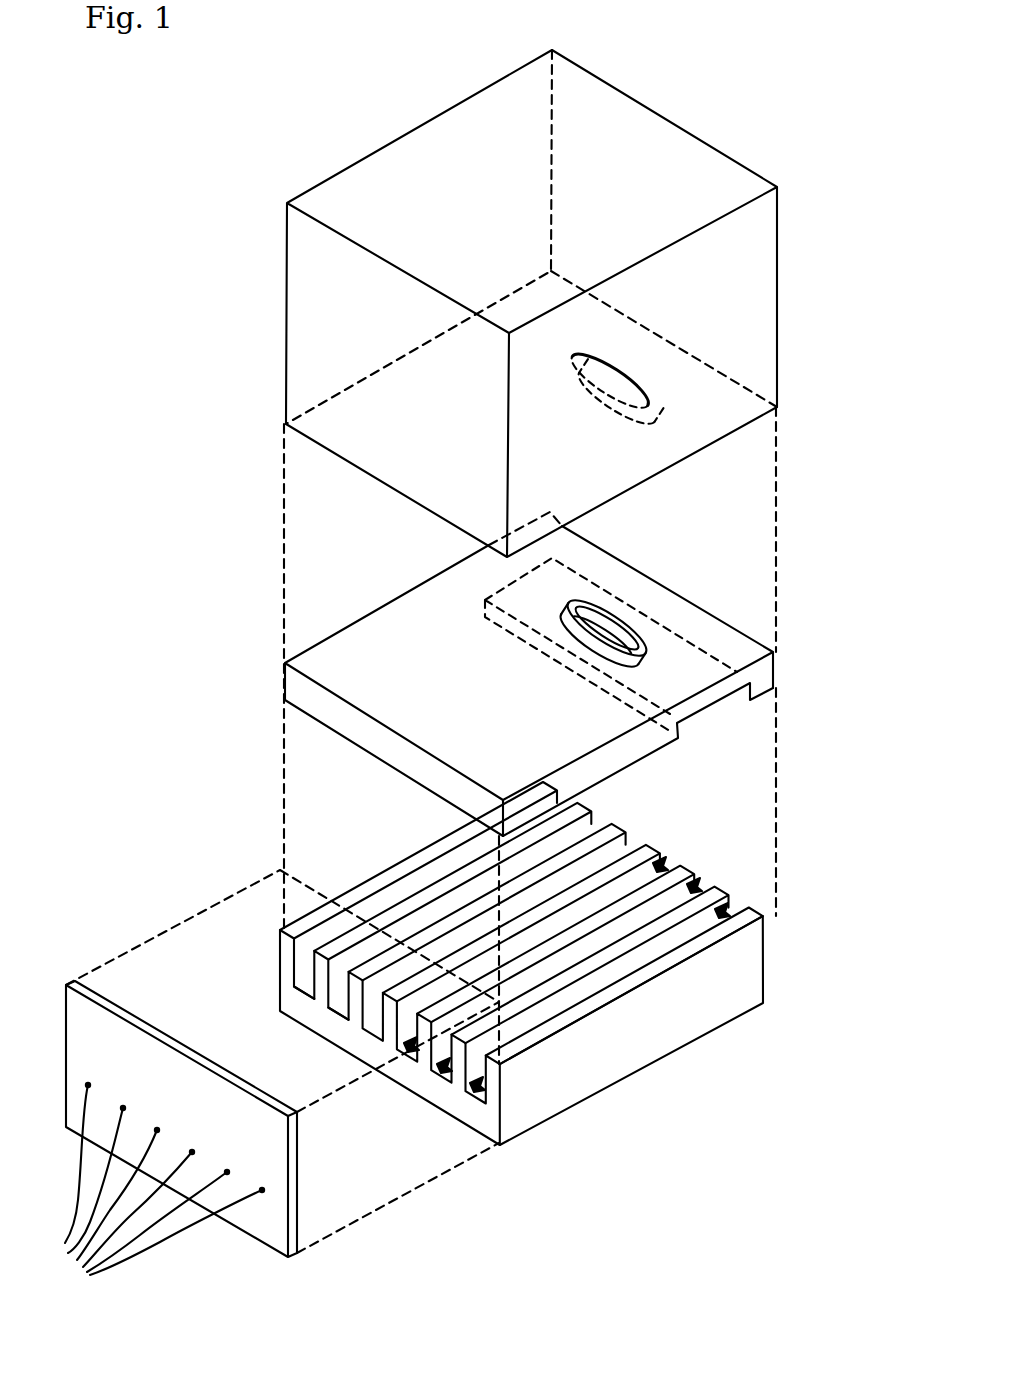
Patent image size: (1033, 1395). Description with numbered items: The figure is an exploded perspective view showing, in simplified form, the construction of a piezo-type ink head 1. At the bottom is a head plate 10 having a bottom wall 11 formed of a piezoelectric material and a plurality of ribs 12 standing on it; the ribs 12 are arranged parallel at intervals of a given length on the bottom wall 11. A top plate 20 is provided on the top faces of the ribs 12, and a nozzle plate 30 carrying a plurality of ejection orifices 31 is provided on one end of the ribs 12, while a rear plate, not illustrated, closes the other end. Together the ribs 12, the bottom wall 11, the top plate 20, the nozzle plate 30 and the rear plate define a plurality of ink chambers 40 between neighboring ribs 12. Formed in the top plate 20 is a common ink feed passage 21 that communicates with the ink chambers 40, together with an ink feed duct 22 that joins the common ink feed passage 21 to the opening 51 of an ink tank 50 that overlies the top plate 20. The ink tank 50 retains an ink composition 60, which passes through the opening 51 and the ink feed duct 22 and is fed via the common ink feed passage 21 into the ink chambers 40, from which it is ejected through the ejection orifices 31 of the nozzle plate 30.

The ink head 1 is at (346, 79).
The head plate 10 is at (633, 1080).
The bottom wall 11 is at (360, 1020).
The ribs 12 is at (312, 996).
The top plate 20 is at (348, 680).
The common ink feed passage 21 is at (712, 714).
The ink feed duct 22 is at (598, 644).
The nozzle plate 30 is at (278, 1242).
The ejection orifices 31 is at (149, 1188).
The ink chambers 40 is at (472, 1092).
The ink tank 50 is at (776, 300).
The opening 51 is at (645, 419).
The ink composition 60 is at (662, 173).